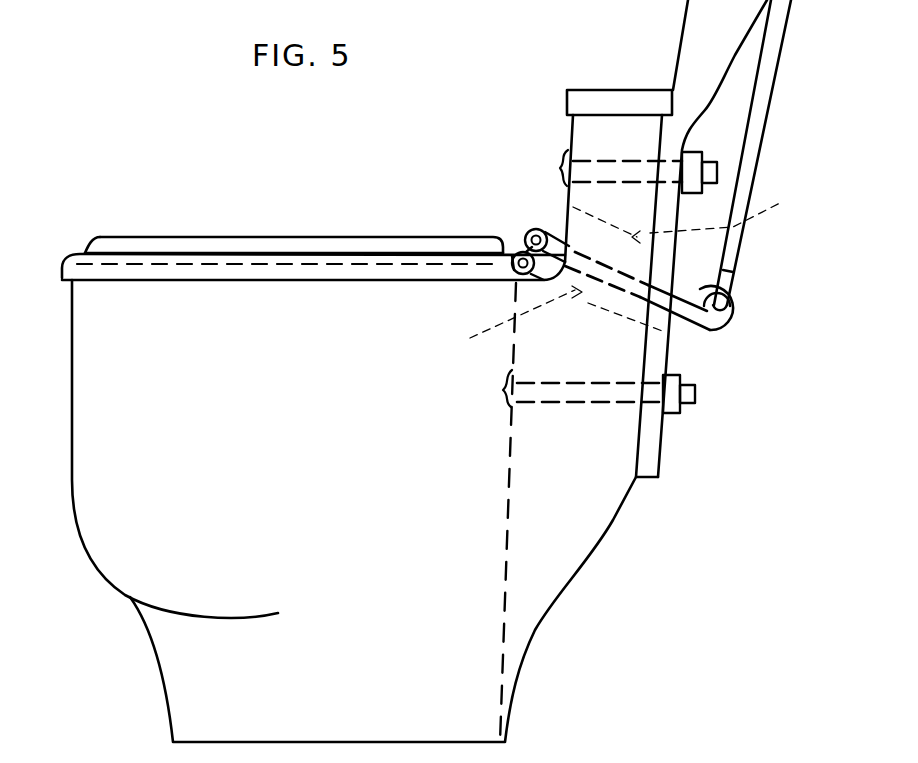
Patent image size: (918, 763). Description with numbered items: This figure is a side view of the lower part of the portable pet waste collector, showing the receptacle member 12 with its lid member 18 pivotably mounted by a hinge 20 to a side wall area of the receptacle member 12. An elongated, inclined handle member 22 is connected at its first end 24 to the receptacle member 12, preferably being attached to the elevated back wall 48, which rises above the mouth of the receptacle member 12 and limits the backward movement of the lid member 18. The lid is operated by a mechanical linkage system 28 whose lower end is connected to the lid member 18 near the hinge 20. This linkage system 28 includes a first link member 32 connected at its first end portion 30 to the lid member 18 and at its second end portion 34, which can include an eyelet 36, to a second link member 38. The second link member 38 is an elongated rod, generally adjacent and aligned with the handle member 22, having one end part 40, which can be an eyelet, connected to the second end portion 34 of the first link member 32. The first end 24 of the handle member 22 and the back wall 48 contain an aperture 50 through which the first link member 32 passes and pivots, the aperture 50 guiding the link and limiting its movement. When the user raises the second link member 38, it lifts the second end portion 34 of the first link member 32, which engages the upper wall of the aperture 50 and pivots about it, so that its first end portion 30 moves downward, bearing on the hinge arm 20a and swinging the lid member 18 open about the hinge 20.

The receptacle member 12 is at (168, 543).
The lid member 18 is at (183, 237).
The hinge 20 is at (511, 252).
The hinge arm 20a is at (515, 244).
The handle member 22 is at (683, 37).
The first end of the handle member 24 is at (660, 453).
The mechanical linkage system 28 is at (777, 97).
The first end portion of the first link member 30 is at (538, 229).
The first link member 32 is at (595, 274).
The second end portion of the first link member 34 is at (738, 322).
The eyelet 36 is at (730, 292).
The second link member 38 is at (757, 178).
The end part of the second link member 40 is at (740, 272).
The elevated back wall 48 is at (571, 137).
The aperture 50 is at (632, 270).